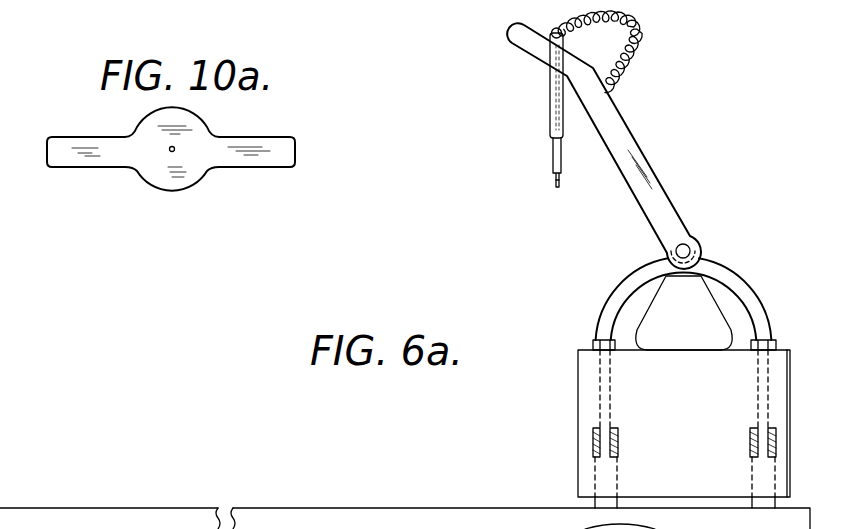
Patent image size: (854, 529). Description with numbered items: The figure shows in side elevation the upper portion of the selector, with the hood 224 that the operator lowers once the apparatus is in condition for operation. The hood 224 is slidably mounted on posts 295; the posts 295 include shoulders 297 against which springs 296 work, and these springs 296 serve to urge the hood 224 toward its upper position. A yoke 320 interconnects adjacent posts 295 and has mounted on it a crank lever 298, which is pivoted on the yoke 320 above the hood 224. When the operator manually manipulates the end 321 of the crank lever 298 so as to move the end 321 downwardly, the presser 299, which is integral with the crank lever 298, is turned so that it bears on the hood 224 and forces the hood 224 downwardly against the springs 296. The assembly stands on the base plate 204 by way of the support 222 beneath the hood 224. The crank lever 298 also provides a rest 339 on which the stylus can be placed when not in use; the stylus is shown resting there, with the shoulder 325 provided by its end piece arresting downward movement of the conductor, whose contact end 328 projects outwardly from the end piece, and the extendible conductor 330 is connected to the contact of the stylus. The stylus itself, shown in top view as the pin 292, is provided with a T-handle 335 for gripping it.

In FIG. 6A, the base plate 204 is at (327, 503).
In FIG. 6A, the support legs 222 is at (470, 506).
In FIG. 6A, the hood 224 is at (583, 417).
In FIG. 10A, the pin 292 is at (208, 177).
In FIG. 6A, the pin 292 is at (546, 92).
In FIG. 6A, the posts 295 is at (760, 365).
In FIG. 6A, the springs 296 is at (749, 440).
In FIG. 6A, the shoulders 297 is at (762, 456).
In FIG. 6A, the crank lever 298 is at (632, 187).
In FIG. 6A, the presser 299 is at (650, 315).
In FIG. 6A, the yoke 320 is at (745, 285).
In FIG. 6A, the end of crank lever 321 is at (510, 20).
In FIG. 6A, the shoulder 325 is at (555, 31).
In FIG. 6A, the contact end 328 is at (556, 181).
In FIG. 10A, the extendible conductor 330 is at (172, 153).
In FIG. 6A, the extendible conductor 330 is at (638, 22).
In FIG. 10A, the T-handle 335 is at (283, 140).
In FIG. 6A, the rest 339 is at (532, 45).